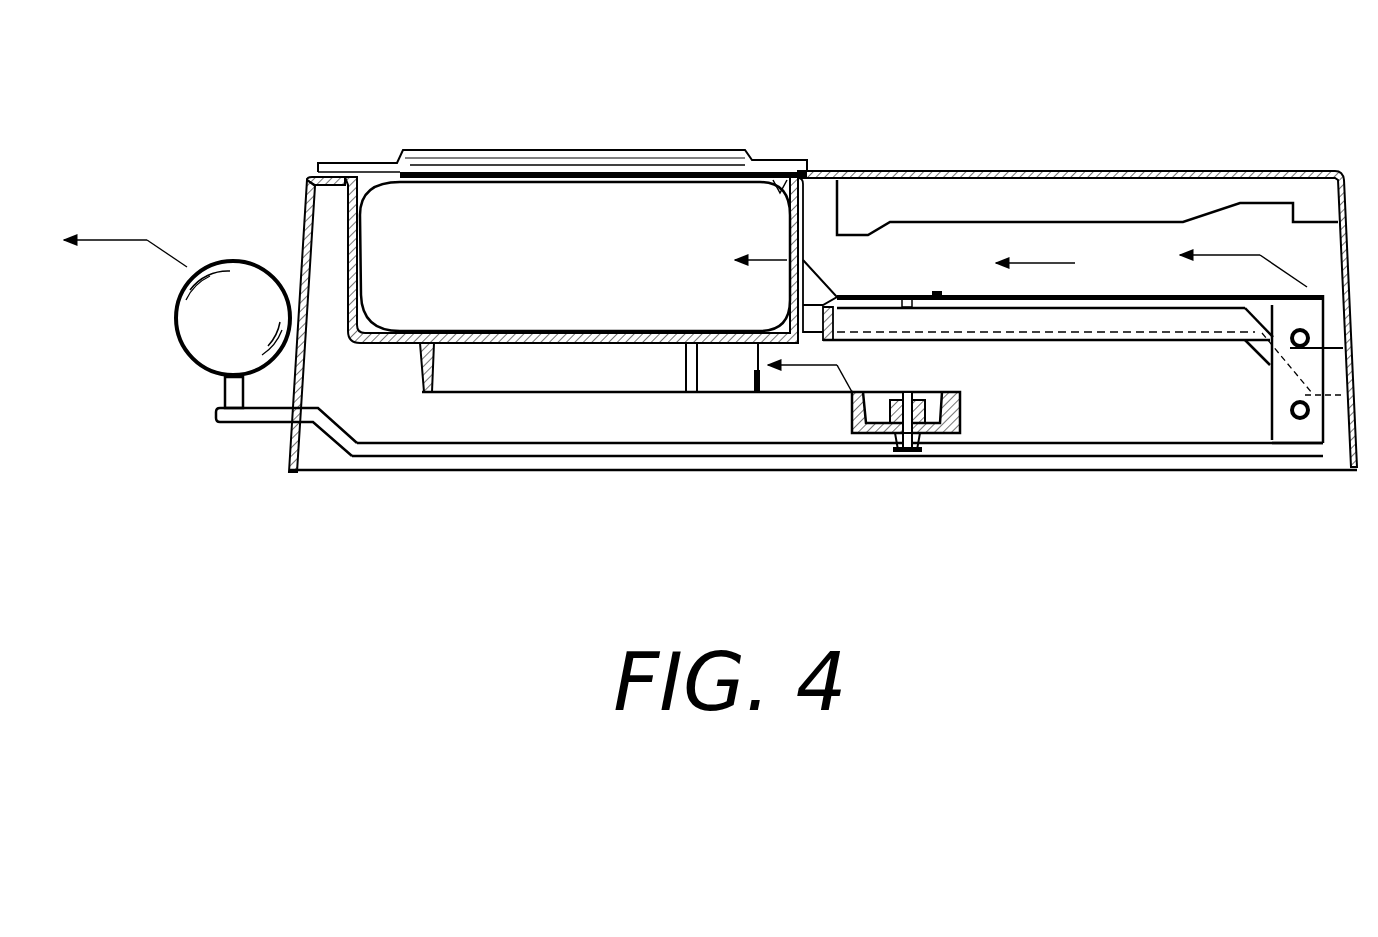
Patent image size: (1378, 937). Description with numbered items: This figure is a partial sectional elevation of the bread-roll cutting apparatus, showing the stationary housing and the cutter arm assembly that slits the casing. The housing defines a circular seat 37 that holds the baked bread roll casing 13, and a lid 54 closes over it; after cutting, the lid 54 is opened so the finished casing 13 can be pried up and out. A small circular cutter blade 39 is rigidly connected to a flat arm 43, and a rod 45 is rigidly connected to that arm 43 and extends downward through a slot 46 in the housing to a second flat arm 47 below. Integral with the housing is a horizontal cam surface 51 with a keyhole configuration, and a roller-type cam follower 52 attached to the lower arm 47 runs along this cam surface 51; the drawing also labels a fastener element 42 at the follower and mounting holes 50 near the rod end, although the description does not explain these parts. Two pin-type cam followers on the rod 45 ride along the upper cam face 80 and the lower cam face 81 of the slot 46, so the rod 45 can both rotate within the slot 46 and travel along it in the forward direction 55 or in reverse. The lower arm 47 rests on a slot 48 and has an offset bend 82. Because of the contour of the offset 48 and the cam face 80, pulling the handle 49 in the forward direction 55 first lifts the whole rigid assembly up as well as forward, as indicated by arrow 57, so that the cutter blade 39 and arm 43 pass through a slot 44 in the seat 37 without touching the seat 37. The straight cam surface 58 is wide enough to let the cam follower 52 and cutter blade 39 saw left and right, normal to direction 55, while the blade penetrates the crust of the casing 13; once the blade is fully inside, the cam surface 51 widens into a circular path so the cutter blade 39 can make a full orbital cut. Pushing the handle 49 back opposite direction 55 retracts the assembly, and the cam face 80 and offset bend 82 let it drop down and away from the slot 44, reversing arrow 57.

The bread casing 13 is at (551, 199).
The circular seat 37 is at (282, 222).
The cutter blade 39 is at (903, 193).
The screw 42 is at (909, 483).
The flat arm 43 is at (1073, 261).
The slot 44 is at (1070, 192).
The rod 45 is at (1244, 479).
The slot 46 is at (1046, 354).
The second flat arm 47 is at (637, 481).
The slot 48 is at (273, 460).
The handle 49 is at (195, 348).
The mounting holes 50 is at (1307, 449).
The cam surface 51 is at (558, 447).
The cam follower 52 is at (918, 476).
The lid 54 is at (562, 109).
The forward direction 55 is at (1151, 269).
The arrow 57 is at (125, 196).
The straight cam surface 58 is at (803, 447).
The upper cam face 80 is at (823, 275).
The lower cam face 81 is at (1269, 359).
The offset bend 82 is at (788, 493).